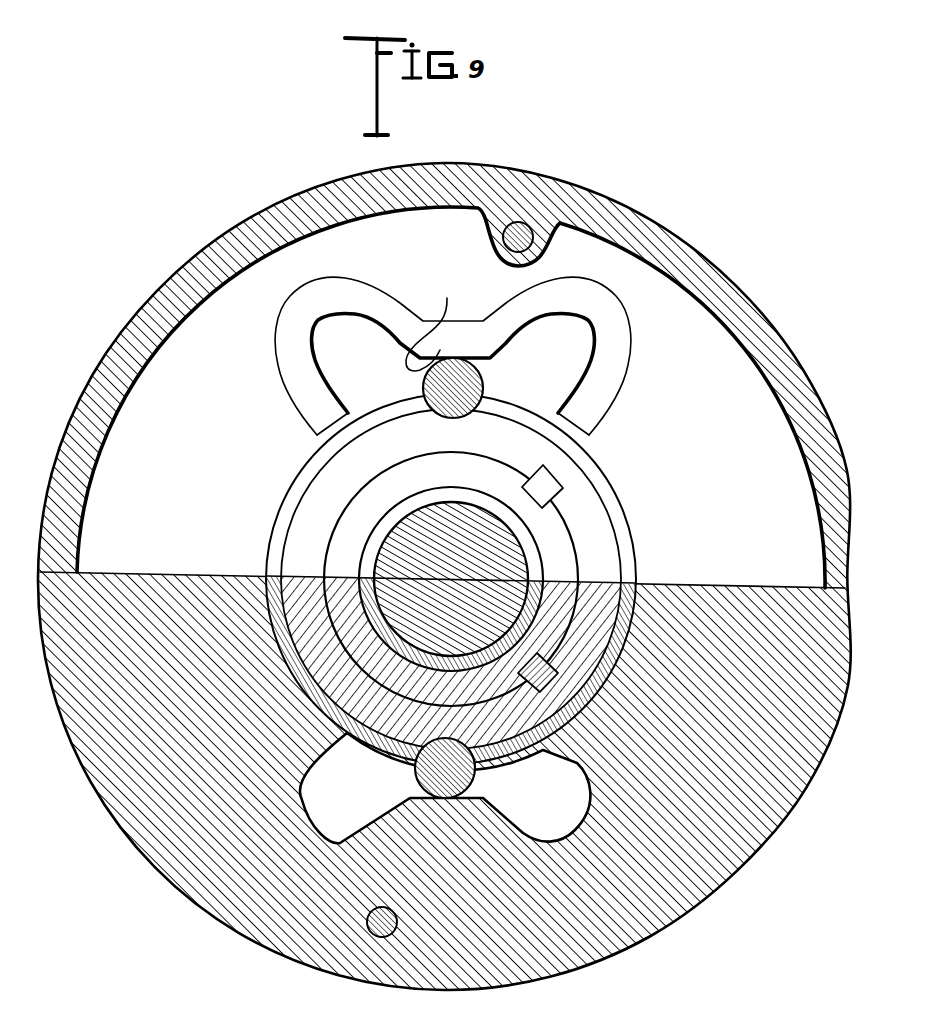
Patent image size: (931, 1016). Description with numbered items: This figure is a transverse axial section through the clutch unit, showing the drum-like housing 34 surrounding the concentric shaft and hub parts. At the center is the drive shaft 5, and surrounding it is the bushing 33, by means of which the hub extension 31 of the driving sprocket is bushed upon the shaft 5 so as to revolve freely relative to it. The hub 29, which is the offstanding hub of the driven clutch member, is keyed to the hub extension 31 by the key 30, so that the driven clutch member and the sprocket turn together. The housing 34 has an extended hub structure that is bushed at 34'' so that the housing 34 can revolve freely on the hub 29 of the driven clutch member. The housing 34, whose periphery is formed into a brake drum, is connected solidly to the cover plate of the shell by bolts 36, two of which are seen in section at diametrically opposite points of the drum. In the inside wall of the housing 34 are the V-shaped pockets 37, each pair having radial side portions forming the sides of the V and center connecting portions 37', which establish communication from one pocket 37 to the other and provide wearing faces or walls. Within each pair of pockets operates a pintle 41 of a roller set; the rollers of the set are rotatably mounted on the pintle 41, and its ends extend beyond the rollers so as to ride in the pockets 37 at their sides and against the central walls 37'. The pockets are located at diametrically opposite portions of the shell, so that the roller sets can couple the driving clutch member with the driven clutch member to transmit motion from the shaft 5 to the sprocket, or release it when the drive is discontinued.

The drive shaft 5 is at (440, 550).
The hub 29 is at (593, 548).
The key 30 is at (558, 480).
The hub extension 31 is at (557, 564).
The bushing 33 is at (375, 547).
The housing 34 is at (444, 576).
The bushing 34'' is at (473, 579).
The bolts 36 is at (528, 228).
The V-shaped pockets 37 is at (453, 560).
The center connecting portions 37' is at (411, 529).
The pintle 41 is at (480, 378).